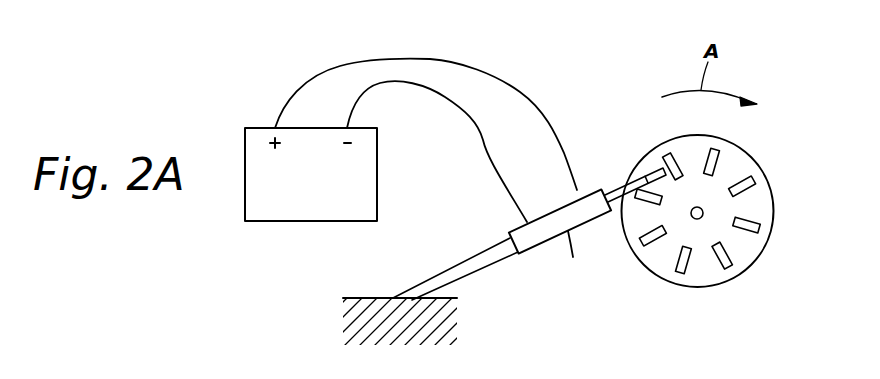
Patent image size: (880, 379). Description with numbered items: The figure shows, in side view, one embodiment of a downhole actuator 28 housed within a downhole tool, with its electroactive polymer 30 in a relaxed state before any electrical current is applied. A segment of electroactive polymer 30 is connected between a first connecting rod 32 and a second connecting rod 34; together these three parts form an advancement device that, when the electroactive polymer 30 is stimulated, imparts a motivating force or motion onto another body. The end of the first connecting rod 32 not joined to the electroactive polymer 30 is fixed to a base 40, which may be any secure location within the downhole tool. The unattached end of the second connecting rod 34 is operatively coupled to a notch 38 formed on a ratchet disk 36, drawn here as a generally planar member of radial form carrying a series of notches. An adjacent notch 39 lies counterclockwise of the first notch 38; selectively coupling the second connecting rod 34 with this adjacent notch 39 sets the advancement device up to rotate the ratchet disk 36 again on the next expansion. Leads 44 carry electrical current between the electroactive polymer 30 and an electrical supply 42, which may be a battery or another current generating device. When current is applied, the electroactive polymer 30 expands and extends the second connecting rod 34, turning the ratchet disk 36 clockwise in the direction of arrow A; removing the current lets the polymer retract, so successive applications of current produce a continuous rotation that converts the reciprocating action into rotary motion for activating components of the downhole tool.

The downhole actuator 28 is at (536, 60).
The electroactive polymer 30 is at (571, 238).
The first connecting rod 32 is at (483, 262).
The second connecting rod 34 is at (621, 222).
The ratchet disk 36 is at (700, 290).
The notch 38 is at (754, 224).
The adjacent notch 39 is at (752, 184).
The base 40 is at (362, 298).
The electrical supply 42 is at (377, 177).
The leads 44 is at (363, 66).